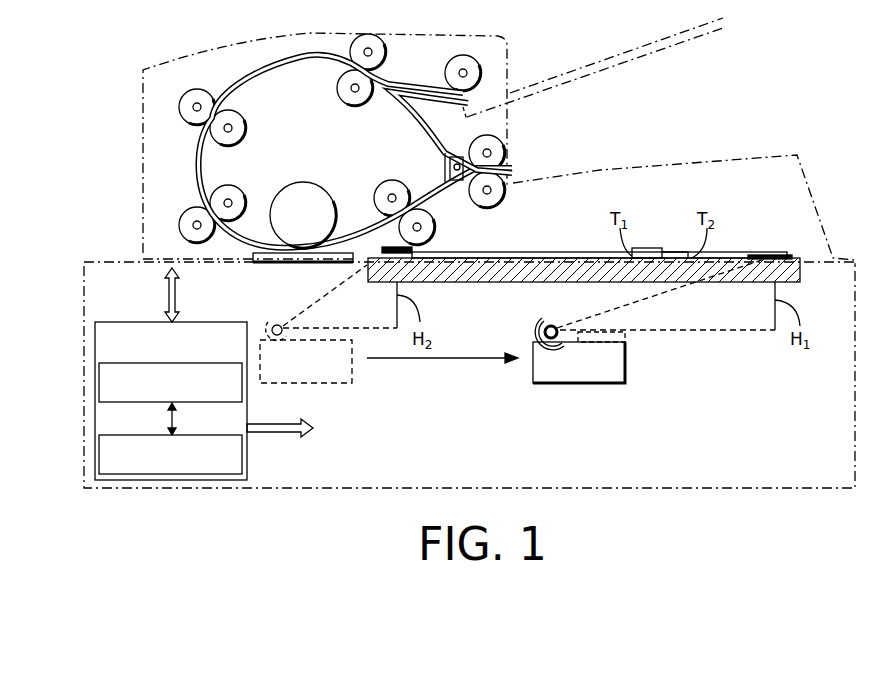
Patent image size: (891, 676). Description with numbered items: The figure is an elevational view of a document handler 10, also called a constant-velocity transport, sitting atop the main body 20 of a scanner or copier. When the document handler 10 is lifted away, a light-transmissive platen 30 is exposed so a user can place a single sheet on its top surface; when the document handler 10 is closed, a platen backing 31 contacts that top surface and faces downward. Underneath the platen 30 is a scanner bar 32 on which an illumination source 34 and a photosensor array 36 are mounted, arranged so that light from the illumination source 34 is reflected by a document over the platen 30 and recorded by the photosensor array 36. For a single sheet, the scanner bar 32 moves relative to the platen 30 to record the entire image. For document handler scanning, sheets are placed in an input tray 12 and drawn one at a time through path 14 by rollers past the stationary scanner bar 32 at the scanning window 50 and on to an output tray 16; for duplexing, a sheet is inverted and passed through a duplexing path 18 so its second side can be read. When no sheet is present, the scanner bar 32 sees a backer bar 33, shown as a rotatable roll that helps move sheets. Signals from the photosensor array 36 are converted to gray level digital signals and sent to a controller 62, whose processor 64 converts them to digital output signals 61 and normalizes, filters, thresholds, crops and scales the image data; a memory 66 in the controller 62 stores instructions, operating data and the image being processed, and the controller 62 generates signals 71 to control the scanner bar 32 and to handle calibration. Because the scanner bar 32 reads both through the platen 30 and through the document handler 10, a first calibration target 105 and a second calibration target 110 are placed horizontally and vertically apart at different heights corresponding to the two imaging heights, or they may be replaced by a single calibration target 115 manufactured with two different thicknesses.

The document handler 10 is at (140, 153).
The input tray 12 is at (572, 86).
The path 14 is at (312, 57).
The output tray 16 is at (578, 172).
The duplexing path 18 is at (415, 118).
The main body 20 is at (82, 362).
The light-transmissive platen 30 is at (443, 283).
The platen backing 31 is at (548, 252).
The scanner bar 32 is at (628, 372).
The backer bar 33 is at (322, 188).
The illumination source 34 is at (540, 330).
The photosensor array 36 is at (630, 338).
The scanning window 50 is at (265, 263).
The digital output signals 61 is at (167, 292).
The controller 62 is at (205, 322).
The processor 64 is at (97, 382).
The memory 66 is at (97, 455).
The signals 71 is at (284, 430).
The first calibration target 105 is at (765, 255).
The second calibration target 110 is at (414, 251).
The single calibration target 115 is at (654, 248).